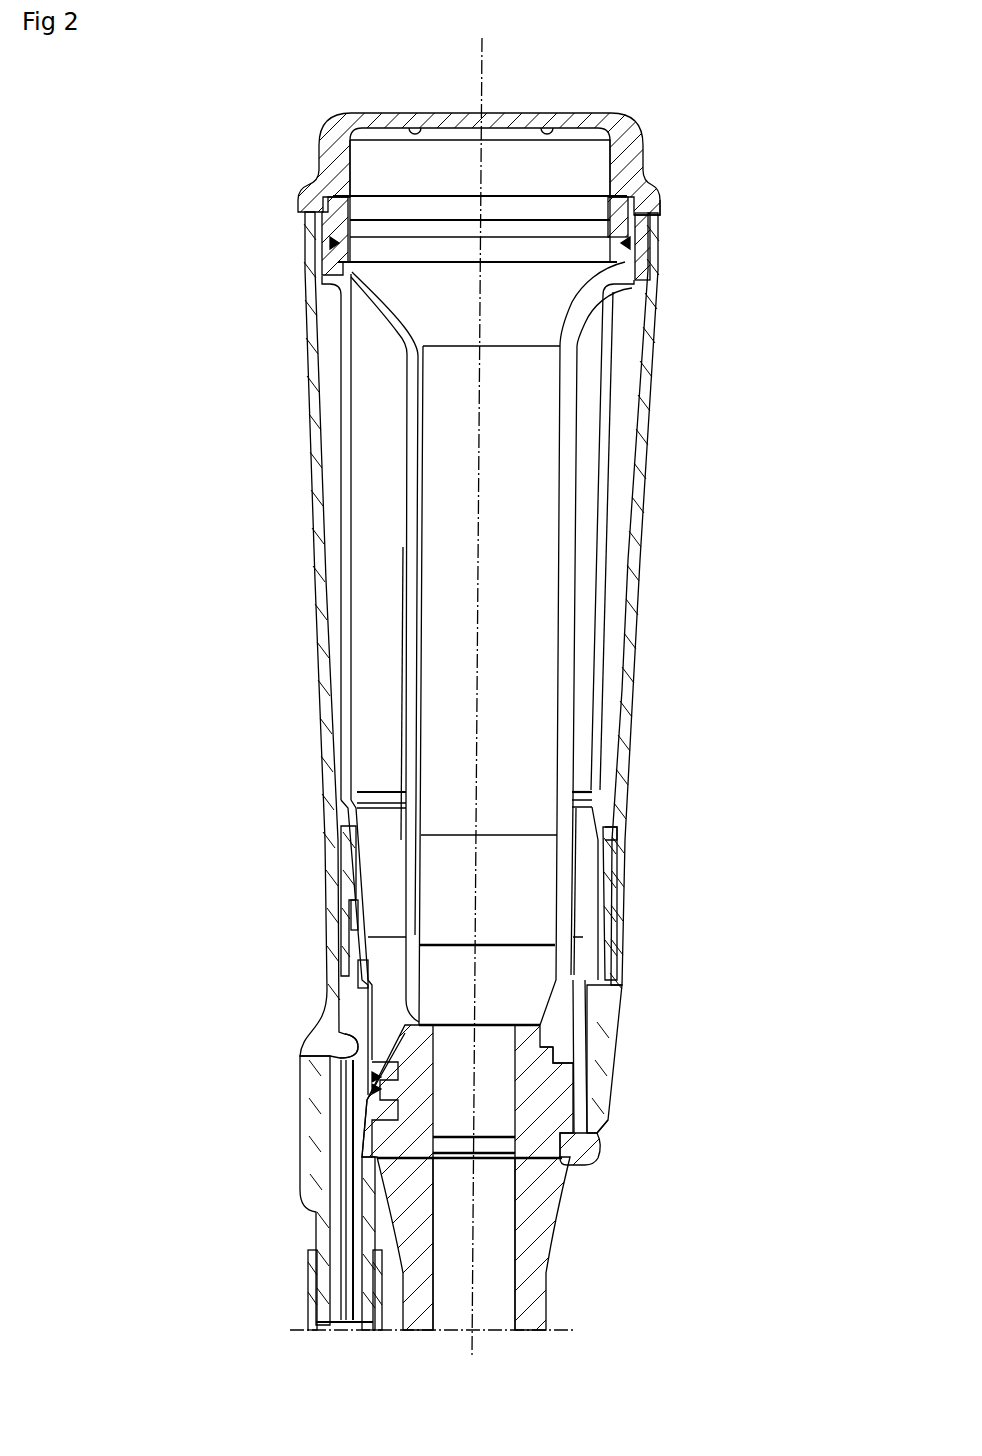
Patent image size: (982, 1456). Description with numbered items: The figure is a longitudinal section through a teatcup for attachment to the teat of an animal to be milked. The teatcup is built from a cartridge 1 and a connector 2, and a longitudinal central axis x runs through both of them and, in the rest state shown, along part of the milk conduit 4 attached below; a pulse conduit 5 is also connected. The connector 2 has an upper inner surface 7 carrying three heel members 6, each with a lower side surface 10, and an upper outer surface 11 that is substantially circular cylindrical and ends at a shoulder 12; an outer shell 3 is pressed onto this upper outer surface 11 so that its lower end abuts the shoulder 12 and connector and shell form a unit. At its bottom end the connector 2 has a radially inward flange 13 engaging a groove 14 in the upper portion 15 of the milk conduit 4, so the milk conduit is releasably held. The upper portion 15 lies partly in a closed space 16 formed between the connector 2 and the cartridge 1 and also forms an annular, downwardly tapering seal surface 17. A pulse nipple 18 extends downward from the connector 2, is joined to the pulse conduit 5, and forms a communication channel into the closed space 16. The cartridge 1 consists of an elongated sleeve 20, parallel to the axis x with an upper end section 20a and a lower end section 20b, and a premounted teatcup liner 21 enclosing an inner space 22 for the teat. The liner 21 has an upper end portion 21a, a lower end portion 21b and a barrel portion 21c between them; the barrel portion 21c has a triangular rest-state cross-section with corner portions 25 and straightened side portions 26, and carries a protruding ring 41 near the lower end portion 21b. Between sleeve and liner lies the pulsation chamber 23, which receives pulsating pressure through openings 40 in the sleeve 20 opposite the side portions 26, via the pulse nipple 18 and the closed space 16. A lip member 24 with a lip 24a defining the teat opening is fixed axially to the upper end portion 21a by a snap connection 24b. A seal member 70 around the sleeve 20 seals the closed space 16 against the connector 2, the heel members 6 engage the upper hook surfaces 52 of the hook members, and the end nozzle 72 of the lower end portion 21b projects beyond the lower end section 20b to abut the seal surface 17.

The longitudinal central axis x is at (487, 75).
The cartridge 1 is at (333, 344).
The connector 2 is at (622, 1007).
The outer shell 3 is at (303, 277).
The milk conduit 4 is at (528, 1297).
The pulse conduit 5 is at (308, 1317).
The heel member 6 is at (336, 904).
The upper inner surface 7 is at (572, 832).
The lower side surface 10 is at (352, 960).
The upper outer surface 11 is at (622, 945).
The shoulder 12 is at (622, 931).
The flange 13 is at (611, 1144).
The groove 14 is at (605, 1127).
The upper portion 15 is at (556, 1190).
The closed space 16 is at (356, 1028).
The seal surface 17 is at (366, 1097).
The pulse nipple 18 is at (324, 1218).
The elongated sleeve 20 is at (650, 303).
The upper end section 20a is at (612, 333).
The lower end section 20b is at (613, 1086).
The teatcup liner 21 is at (578, 440).
The upper end portion 21a is at (328, 242).
The lower end portion 21b is at (360, 1084).
The barrel portion 21c is at (395, 633).
The inner space 22 is at (520, 541).
The pulsation chamber 23 is at (393, 504).
The lip member 24 is at (323, 148).
The lip 24a is at (413, 124).
The snap connection 24b is at (650, 222).
The corner portion 25 is at (568, 395).
The side portion 26 is at (415, 405).
The opening 40 is at (372, 1044).
The protruding ring 41 is at (605, 1051).
The upper hook surface 52 is at (348, 918).
The seal member 70 is at (611, 1029).
The end nozzle 72 is at (400, 1126).